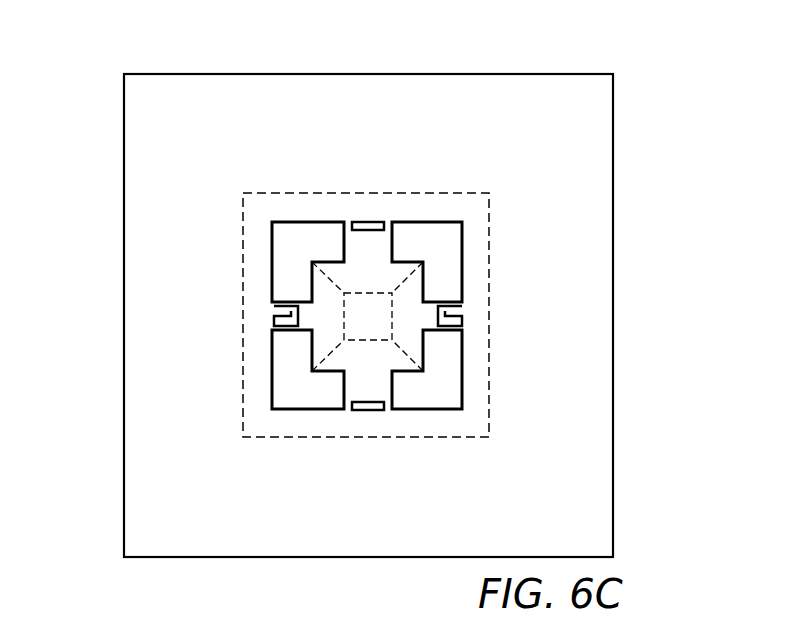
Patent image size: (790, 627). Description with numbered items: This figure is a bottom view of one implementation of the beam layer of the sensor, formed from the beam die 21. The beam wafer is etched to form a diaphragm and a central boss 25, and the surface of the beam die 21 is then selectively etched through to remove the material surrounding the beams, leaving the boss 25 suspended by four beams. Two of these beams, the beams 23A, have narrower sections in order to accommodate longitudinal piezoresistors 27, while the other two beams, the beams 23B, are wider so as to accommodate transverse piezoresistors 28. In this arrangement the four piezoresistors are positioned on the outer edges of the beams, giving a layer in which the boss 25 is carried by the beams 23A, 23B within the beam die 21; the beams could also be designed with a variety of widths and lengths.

The beam die 21 is at (195, 74).
The beams 23A is at (382, 242).
The beams 23B is at (310, 323).
The boss 25 is at (320, 283).
The longitudinal piezoresistors 27 is at (270, 320).
The transverse piezoresistors 28 is at (365, 222).